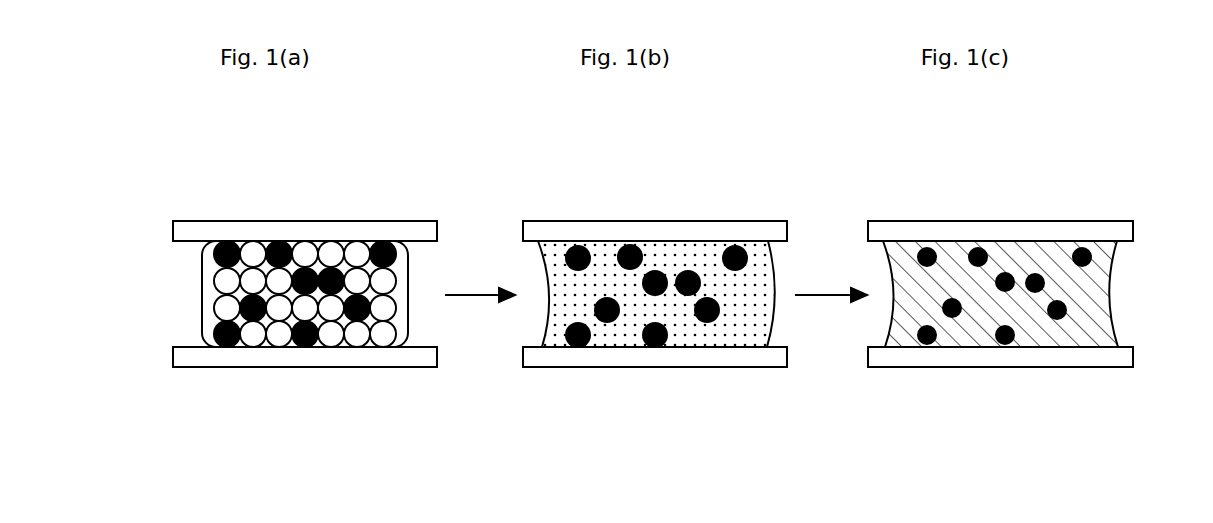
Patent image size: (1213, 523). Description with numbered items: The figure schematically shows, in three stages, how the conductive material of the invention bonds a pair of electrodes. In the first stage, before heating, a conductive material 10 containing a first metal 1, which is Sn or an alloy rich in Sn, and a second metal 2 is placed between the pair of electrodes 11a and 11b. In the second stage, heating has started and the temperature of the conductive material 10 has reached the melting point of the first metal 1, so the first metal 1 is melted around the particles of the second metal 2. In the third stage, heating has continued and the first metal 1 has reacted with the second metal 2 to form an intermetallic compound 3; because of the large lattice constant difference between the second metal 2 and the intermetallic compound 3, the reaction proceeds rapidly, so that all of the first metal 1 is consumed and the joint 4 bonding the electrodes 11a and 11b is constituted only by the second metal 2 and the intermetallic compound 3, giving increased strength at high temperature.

In FIG. 1A, the first metal 1 is at (267, 243).
In FIG. 1A, the second metal 2 is at (215, 243).
In FIG. 1B, the second metal 2 is at (633, 246).
In FIG. 1C, the second metal 2 is at (981, 249).
In FIG. 1C, the intermetallic compound 3 is at (1083, 300).
In FIG. 1C, the joint 4 is at (1112, 282).
In FIG. 1A, the conductive material 10 is at (417, 285).
In FIG. 1B, the conductive material 10 is at (765, 293).
In FIG. 1A, the electrode 11a is at (317, 221).
In FIG. 1B, the electrode 11a is at (592, 221).
In FIG. 1C, the electrode 11a is at (927, 221).
In FIG. 1A, the electrode 11b is at (310, 367).
In FIG. 1B, the electrode 11b is at (645, 367).
In FIG. 1C, the electrode 11b is at (938, 367).